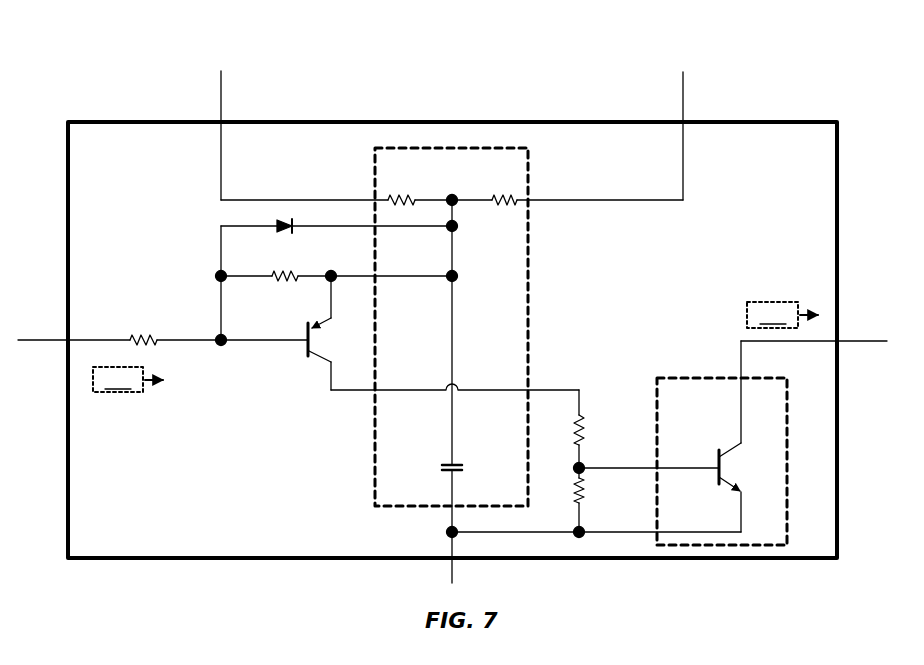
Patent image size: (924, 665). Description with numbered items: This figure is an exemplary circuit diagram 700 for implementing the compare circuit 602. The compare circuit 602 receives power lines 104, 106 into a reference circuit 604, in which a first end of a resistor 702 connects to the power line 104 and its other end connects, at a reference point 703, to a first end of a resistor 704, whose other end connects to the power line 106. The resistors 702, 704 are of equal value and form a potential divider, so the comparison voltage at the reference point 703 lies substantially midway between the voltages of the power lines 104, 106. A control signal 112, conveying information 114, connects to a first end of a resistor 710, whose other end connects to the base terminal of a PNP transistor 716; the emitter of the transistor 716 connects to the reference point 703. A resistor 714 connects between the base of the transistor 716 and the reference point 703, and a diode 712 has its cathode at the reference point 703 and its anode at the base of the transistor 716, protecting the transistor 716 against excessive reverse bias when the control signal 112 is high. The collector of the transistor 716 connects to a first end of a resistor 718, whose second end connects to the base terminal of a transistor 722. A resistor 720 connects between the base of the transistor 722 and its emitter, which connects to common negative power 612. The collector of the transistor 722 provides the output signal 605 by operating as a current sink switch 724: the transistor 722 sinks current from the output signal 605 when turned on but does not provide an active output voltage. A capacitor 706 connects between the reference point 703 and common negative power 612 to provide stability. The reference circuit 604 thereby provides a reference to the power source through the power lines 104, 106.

The circuit diagram 700 is at (90, 50).
The compare circuit 602 is at (277, 546).
The power line 104 is at (222, 93).
The power line 106 is at (682, 89).
The control signal 112 is at (41, 339).
The information 114 is at (455, 347).
The reference circuit 604 is at (529, 274).
The output signal 605 is at (868, 340).
The common negative power 612 is at (451, 570).
The resistor 702 is at (406, 196).
The reference point 703 is at (456, 193).
The resistor 704 is at (501, 210).
The capacitor 706 is at (441, 466).
The resistor 710 is at (137, 333).
The diode 712 is at (272, 227).
The resistor 714 is at (274, 280).
The PNP transistor 716 is at (308, 352).
The resistor 718 is at (582, 425).
The resistor 720 is at (584, 490).
The transistor 722 is at (717, 463).
The current sink switch 724 is at (684, 377).